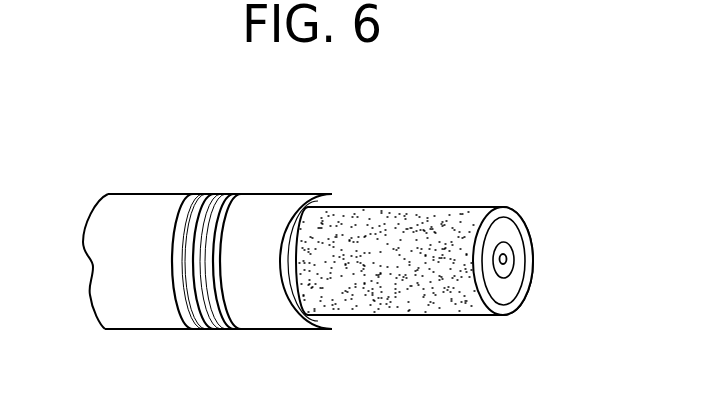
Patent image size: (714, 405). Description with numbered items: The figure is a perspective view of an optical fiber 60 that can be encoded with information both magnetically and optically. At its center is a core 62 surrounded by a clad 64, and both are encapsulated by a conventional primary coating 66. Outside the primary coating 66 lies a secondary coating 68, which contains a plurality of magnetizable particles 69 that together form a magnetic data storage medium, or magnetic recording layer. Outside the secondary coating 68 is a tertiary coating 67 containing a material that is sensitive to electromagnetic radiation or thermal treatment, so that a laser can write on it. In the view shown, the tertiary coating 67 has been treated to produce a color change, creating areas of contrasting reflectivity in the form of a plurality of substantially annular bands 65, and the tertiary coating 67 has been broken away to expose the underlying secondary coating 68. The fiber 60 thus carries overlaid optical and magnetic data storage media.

The optical fiber 60 is at (513, 170).
The core 62 is at (504, 267).
The clad 64 is at (507, 250).
The substantially annular bands 65 is at (194, 194).
The primary coating 66 is at (503, 236).
The tertiary coating 67 is at (319, 193).
The secondary coating 68 is at (505, 311).
The magnetizable particles 69 is at (403, 216).